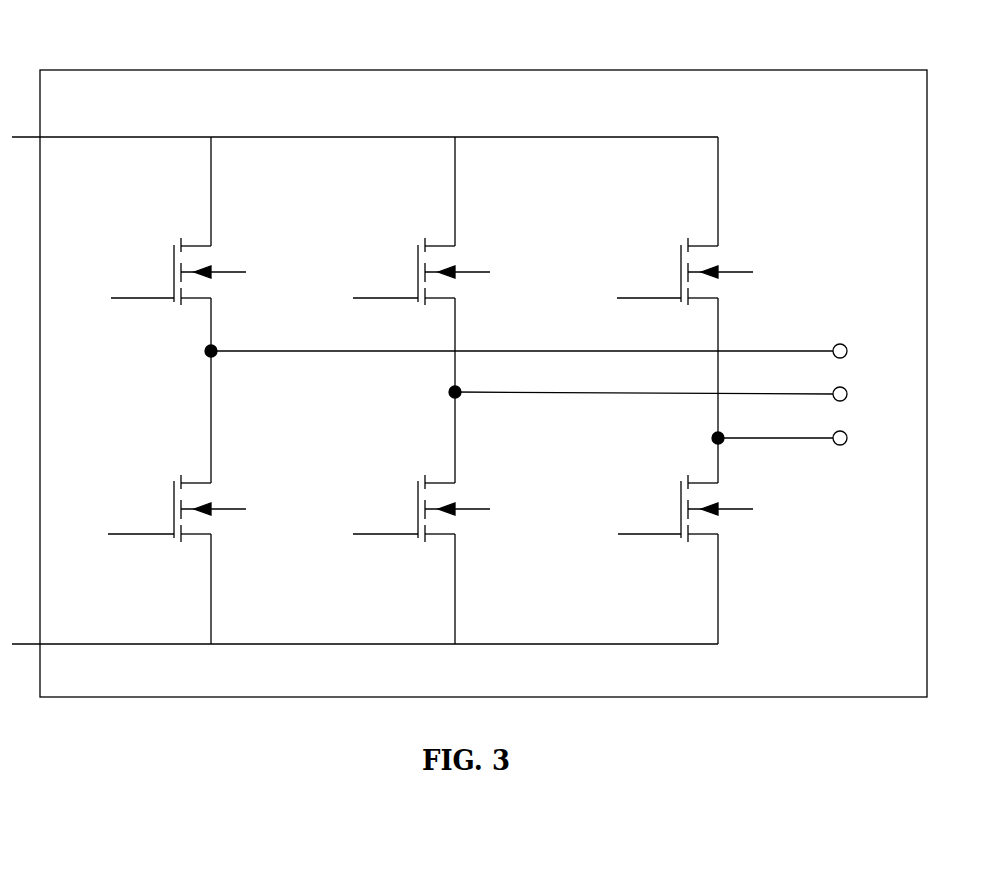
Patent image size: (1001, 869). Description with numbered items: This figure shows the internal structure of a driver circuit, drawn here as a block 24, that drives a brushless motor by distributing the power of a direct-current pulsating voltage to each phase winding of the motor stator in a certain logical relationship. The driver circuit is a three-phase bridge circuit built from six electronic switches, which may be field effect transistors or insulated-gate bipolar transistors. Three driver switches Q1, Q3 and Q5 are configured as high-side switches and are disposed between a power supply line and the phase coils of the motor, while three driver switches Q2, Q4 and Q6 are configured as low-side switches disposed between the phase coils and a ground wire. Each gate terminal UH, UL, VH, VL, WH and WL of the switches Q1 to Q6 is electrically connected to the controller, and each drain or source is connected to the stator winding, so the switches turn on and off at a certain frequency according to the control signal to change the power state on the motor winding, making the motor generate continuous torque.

The inverter circuit 24 is at (523, 98).
The driver switch Q1 is at (178, 271).
The driver switch Q2 is at (177, 508).
The driver switch Q3 is at (421, 271).
The driver switch Q4 is at (421, 508).
The driver switch Q5 is at (685, 271).
The driver switch Q6 is at (685, 508).